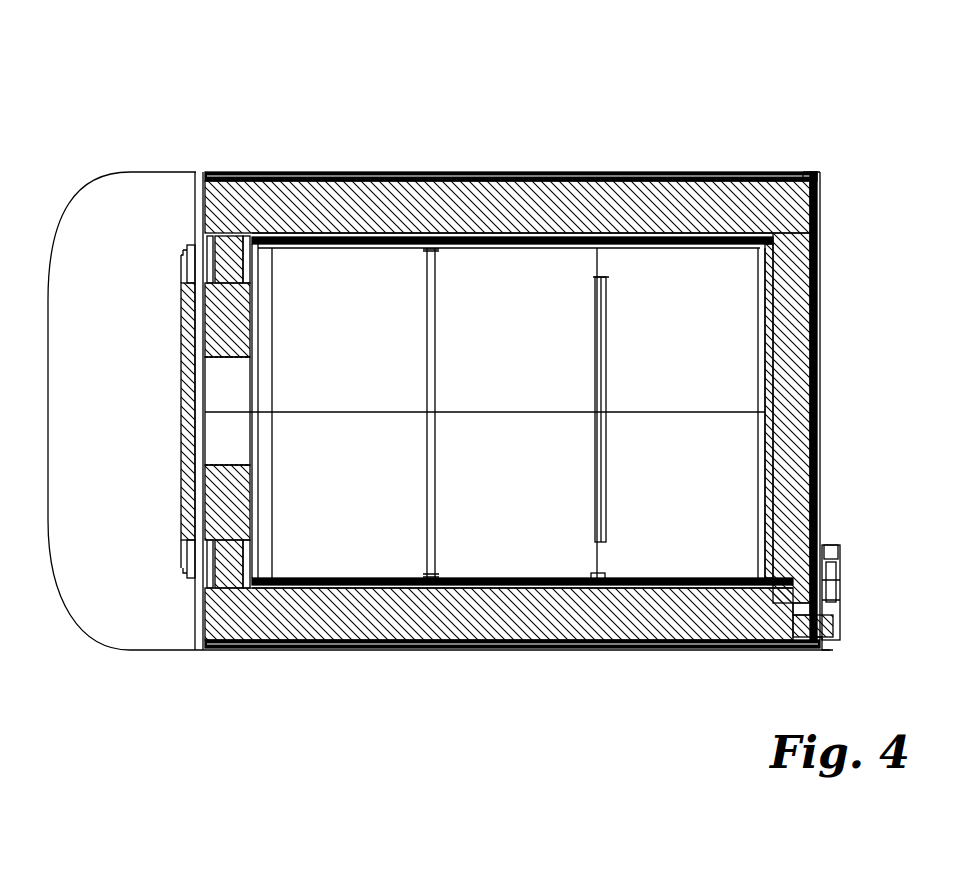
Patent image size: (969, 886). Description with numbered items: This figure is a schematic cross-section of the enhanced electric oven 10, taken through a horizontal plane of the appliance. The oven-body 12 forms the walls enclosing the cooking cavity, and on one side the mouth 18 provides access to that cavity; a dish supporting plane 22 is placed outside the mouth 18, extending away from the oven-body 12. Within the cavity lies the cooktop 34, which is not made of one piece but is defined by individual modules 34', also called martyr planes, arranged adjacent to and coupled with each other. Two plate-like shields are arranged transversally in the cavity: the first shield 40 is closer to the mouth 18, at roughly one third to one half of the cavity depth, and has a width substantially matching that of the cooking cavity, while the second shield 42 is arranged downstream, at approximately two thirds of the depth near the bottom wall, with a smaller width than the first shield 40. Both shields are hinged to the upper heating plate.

The enhanced electric oven 10 is at (627, 98).
The oven-body 12 is at (752, 172).
The dish supporting plane 22 is at (100, 213).
The mouth 18 is at (225, 442).
The cooktop 34 is at (570, 411).
The individual modules 34' is at (485, 418).
The first shield 40 is at (435, 528).
The second shield 42 is at (607, 483).